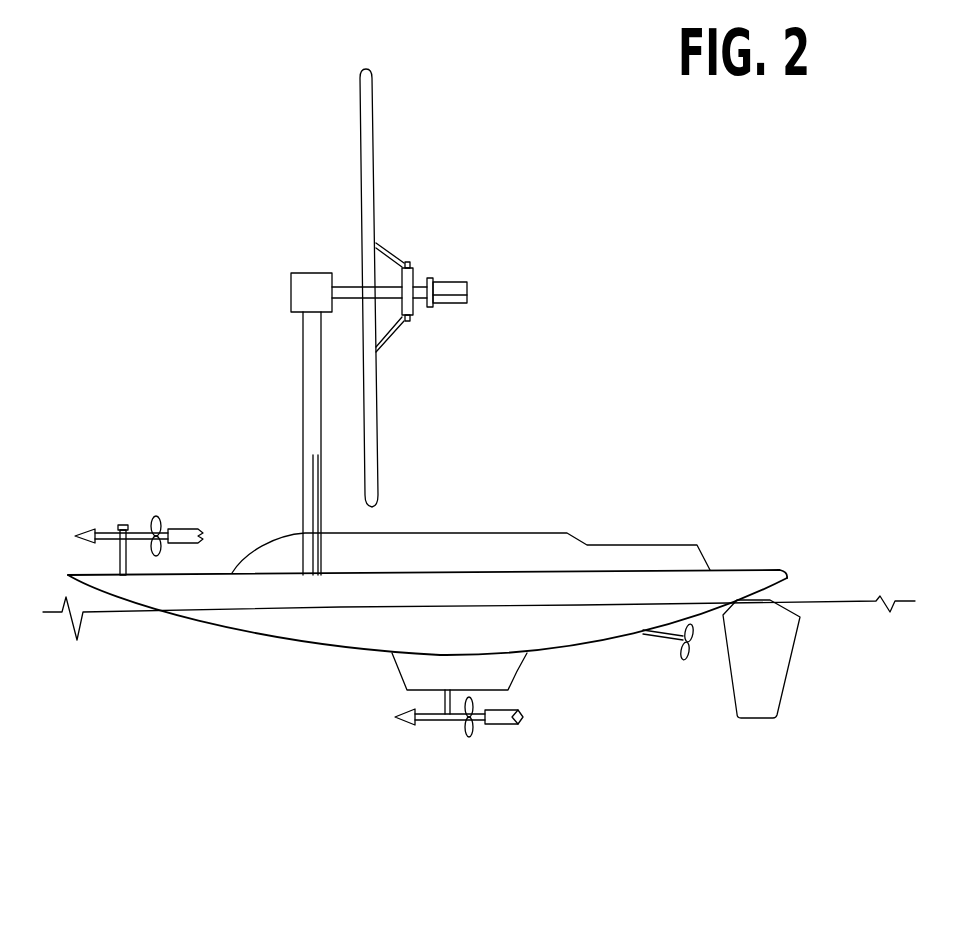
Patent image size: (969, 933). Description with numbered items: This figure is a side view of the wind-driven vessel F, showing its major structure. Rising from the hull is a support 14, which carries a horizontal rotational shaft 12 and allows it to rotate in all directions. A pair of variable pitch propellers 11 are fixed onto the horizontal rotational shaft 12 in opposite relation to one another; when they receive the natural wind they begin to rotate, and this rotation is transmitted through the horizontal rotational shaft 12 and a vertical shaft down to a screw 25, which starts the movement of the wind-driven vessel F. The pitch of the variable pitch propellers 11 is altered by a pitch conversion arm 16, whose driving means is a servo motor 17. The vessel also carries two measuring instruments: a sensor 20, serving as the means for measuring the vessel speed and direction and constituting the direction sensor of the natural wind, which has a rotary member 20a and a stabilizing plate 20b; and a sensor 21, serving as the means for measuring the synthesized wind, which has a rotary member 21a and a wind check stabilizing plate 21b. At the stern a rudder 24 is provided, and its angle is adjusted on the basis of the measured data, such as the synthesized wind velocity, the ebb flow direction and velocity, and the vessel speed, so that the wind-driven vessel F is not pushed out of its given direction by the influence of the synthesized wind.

The variable pitch propeller 11 is at (372, 148).
The horizontal rotational shaft 12 is at (347, 283).
The support 14 is at (303, 423).
The pitch conversion arm 16 is at (388, 252).
The servo motor 17 is at (453, 280).
The sensor 20 is at (427, 722).
The rotary member 20a is at (468, 737).
The stabilizing plate 20b is at (505, 725).
The sensor 21 is at (108, 532).
The rotary member 21a is at (156, 516).
The wind check stabilizing plate 21b is at (200, 532).
The rudder 24 is at (778, 698).
The screw 25 is at (684, 660).
The wind-driven vessel F is at (568, 437).